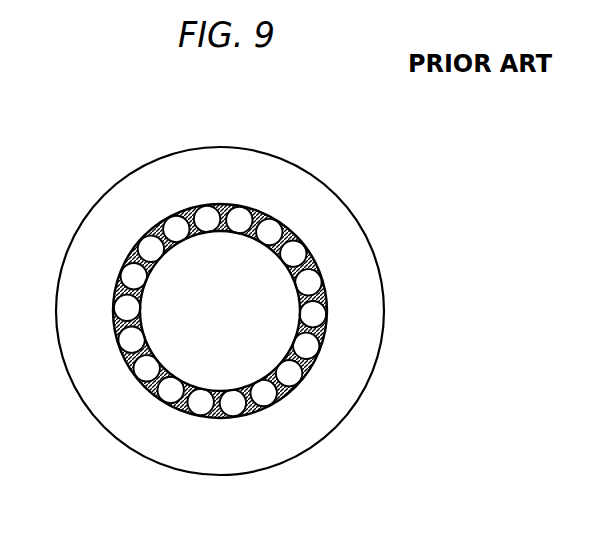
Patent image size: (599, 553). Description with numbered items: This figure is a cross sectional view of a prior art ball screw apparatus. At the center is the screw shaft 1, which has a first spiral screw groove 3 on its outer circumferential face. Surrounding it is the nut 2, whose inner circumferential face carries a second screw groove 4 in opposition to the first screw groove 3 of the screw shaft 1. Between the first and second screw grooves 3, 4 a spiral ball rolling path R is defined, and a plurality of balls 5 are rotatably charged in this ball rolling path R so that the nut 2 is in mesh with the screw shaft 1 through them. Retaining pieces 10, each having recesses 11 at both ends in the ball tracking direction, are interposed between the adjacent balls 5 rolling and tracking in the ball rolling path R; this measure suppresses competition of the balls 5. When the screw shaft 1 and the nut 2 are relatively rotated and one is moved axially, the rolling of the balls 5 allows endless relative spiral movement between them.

The screw shaft 1 is at (188, 369).
The nut 2 is at (270, 457).
The first screw groove 3 is at (147, 333).
The second screw groove 4 is at (121, 357).
The balls 5 is at (271, 230).
The retaining pieces 10 is at (315, 260).
The recesses 11 is at (183, 224).
The ball rolling path R is at (292, 395).